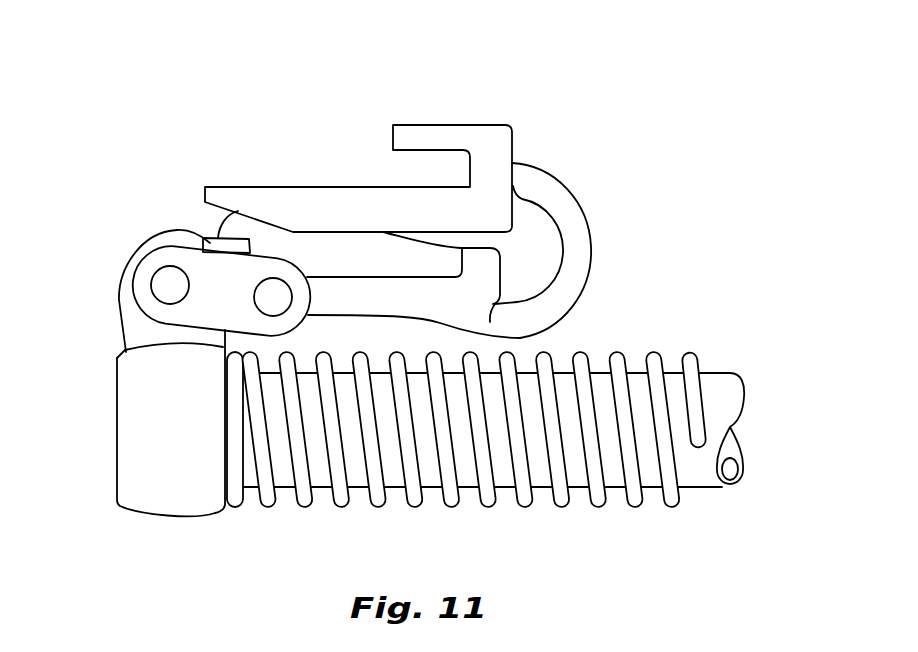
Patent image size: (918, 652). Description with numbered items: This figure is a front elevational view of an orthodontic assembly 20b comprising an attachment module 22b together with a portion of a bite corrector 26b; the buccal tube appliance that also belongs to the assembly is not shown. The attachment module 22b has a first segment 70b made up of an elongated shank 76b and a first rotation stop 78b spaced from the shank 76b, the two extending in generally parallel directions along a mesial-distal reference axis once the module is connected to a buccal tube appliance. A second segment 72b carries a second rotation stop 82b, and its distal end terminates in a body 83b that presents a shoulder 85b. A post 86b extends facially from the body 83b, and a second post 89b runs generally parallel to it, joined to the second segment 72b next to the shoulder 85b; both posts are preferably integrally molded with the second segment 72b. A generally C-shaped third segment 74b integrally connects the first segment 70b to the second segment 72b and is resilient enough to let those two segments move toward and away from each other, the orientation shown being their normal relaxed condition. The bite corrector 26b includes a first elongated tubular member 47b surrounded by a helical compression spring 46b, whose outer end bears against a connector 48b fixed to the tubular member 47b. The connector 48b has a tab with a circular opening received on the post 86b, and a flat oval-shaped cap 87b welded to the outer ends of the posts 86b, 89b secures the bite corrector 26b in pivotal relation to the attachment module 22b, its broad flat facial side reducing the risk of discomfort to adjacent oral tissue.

The orthodontic assembly 20b is at (250, 67).
The attachment module 22b is at (576, 124).
The first segment 70b is at (543, 88).
The first rotation stop 78b is at (440, 125).
The elongated shank 76b is at (420, 187).
The third segment 74b is at (590, 243).
The second segment 72b is at (439, 340).
The body 83b is at (207, 236).
The post 86b is at (155, 303).
The second post 89b is at (292, 283).
The cap 87b is at (130, 273).
The second rotation stop 82b is at (213, 238).
The shoulder 85b is at (250, 253).
The connector 48b is at (137, 453).
The bite corrector 26b is at (334, 527).
The helical compression spring 46b is at (522, 495).
The first elongated tubular member 47b is at (698, 473).